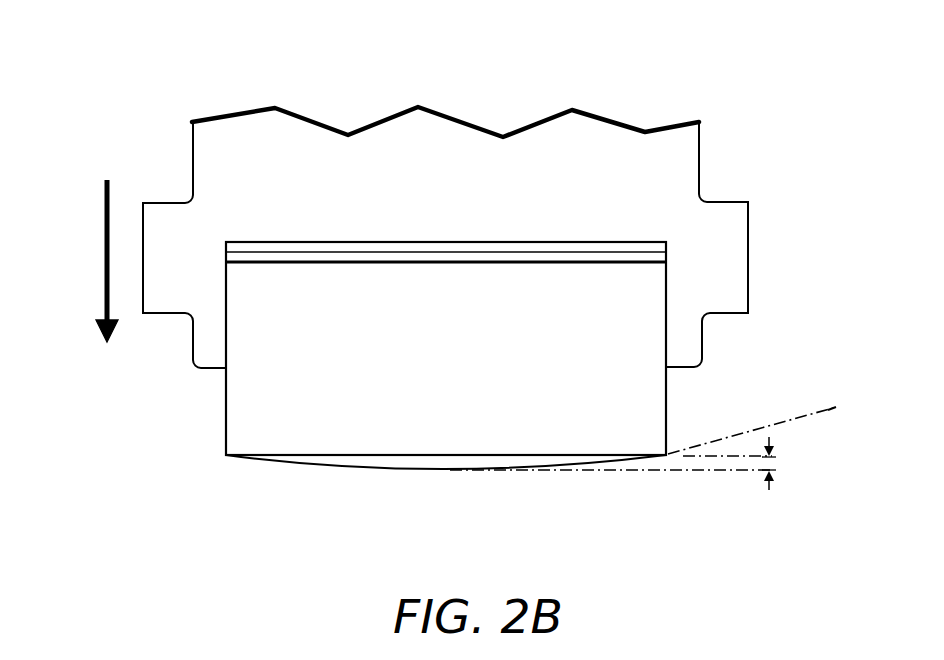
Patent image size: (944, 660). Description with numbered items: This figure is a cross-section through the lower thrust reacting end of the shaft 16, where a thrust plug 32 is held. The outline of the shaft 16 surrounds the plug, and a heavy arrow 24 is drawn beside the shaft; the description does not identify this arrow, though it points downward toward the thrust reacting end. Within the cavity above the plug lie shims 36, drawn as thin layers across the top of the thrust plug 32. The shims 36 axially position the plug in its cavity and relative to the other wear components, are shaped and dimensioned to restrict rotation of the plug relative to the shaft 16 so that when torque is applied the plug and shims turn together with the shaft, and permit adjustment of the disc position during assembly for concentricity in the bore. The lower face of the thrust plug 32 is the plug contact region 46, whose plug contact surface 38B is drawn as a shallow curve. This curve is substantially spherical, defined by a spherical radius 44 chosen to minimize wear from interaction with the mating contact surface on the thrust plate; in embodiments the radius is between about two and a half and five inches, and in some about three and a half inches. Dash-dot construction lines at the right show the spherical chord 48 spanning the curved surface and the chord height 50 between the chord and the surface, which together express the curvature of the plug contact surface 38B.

The shaft 16 is at (262, 149).
The direction of force 24 is at (100, 240).
The thrust plug 32 is at (196, 448).
The shims 36 is at (510, 247).
The plug contact surface 38B is at (418, 471).
The spherical radius 44 is at (828, 398).
The plug contact region 46 is at (365, 462).
The spherical chord 48 is at (470, 455).
The chord height 50 is at (772, 462).